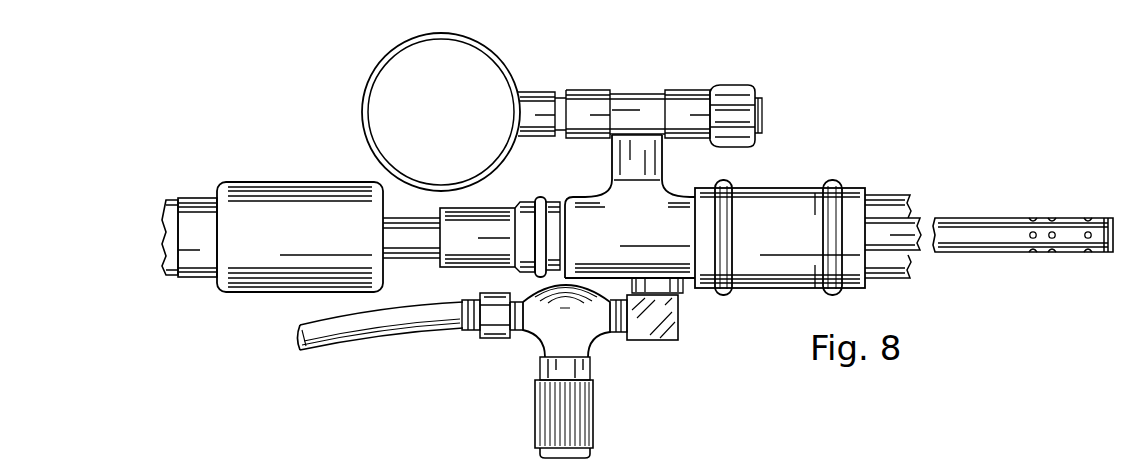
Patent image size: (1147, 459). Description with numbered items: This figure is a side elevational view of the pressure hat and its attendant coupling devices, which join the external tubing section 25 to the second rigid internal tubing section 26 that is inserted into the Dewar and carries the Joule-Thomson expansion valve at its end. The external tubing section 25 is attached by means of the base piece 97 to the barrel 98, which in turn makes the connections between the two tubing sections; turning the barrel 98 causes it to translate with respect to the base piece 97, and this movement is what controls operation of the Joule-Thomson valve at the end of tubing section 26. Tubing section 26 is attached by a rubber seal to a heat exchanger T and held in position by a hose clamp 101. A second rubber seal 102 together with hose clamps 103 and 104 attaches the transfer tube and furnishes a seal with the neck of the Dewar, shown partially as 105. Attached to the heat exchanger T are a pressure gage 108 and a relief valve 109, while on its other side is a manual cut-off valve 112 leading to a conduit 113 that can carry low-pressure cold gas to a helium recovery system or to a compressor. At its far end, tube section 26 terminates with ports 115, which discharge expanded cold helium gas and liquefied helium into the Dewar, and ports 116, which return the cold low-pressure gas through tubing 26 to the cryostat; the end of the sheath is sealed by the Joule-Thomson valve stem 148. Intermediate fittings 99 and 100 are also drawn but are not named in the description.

The external tubing section 25 is at (172, 222).
The second internal tubing section 26 is at (970, 206).
The base piece 97 is at (198, 205).
The barrel 98 is at (292, 192).
The connector fitting 99 is at (465, 215).
The tee fitting 100 is at (612, 197).
The hose clamp 101 is at (541, 200).
The second rubber seal 102 is at (775, 190).
The hose clamp 103 is at (725, 185).
The hose clamp 104 is at (833, 185).
The neck of the Dewar 105 is at (887, 202).
The pressure gage 108 is at (468, 65).
The relief valve 109 is at (730, 92).
The manual cut-off valve 112 is at (595, 335).
The conduit 113 is at (327, 337).
The ports 115 is at (1090, 214).
The ports 116 is at (1052, 214).
The Joule-Thomson valve stem 148 is at (1110, 255).